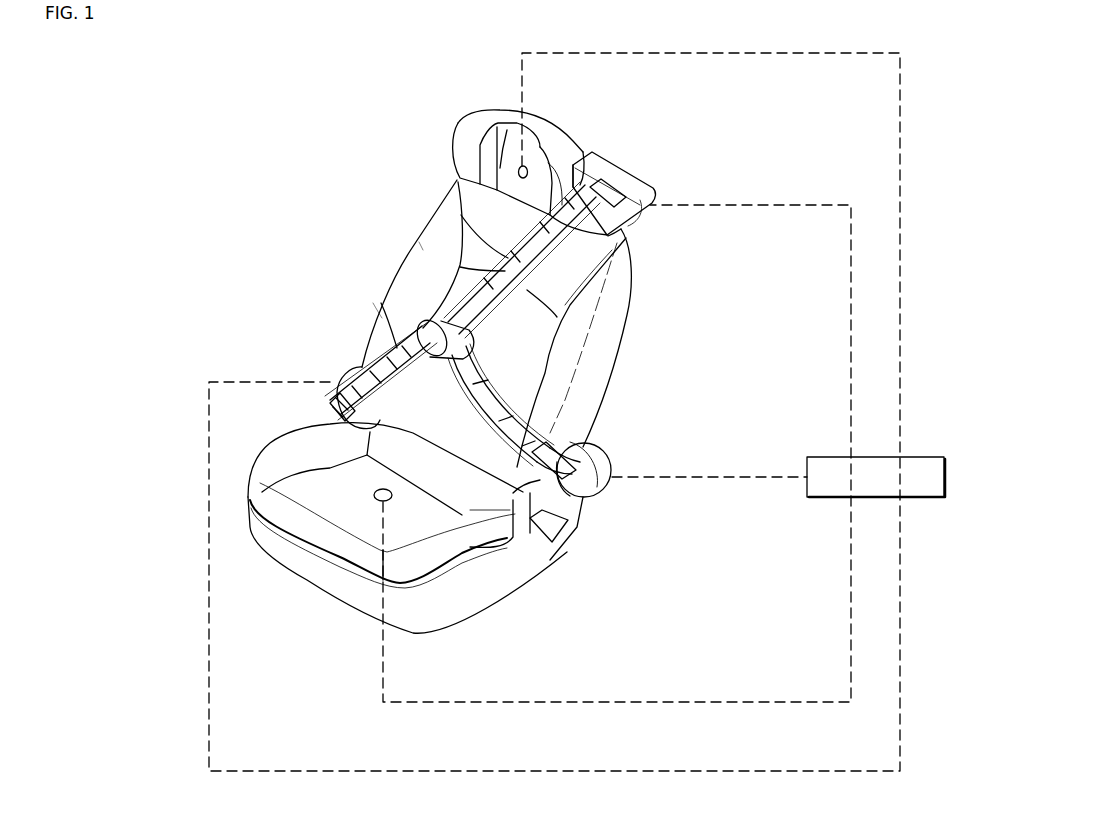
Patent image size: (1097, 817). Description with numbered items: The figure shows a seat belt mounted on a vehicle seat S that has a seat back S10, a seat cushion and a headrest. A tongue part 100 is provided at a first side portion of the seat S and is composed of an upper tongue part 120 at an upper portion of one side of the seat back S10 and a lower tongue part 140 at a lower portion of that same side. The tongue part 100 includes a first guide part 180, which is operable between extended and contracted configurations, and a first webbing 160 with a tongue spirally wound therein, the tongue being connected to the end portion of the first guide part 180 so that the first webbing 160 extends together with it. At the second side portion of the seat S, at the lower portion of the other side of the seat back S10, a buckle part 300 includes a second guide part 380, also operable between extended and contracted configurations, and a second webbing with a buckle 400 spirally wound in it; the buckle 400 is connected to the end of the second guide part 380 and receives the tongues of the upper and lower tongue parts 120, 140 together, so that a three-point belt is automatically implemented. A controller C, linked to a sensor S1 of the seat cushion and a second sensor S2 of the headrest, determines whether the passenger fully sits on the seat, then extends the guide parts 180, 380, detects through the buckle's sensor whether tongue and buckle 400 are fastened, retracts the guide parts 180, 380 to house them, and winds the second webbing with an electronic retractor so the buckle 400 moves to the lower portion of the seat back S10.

The tongue part 100 is at (706, 137).
The upper tongue part 120 is at (622, 181).
The lower tongue part 140 is at (603, 460).
The first webbing 160 is at (513, 250).
The first guide part 180 is at (538, 415).
The buckle part 300 is at (334, 369).
The second guide part 380 is at (391, 351).
The buckle 400 is at (381, 303).
The seat S is at (373, 303).
The sensor of a seat cushion S1 is at (383, 492).
The second sensor of a headrest S2 is at (519, 167).
The seat back S10 is at (423, 250).
The controller C is at (927, 457).